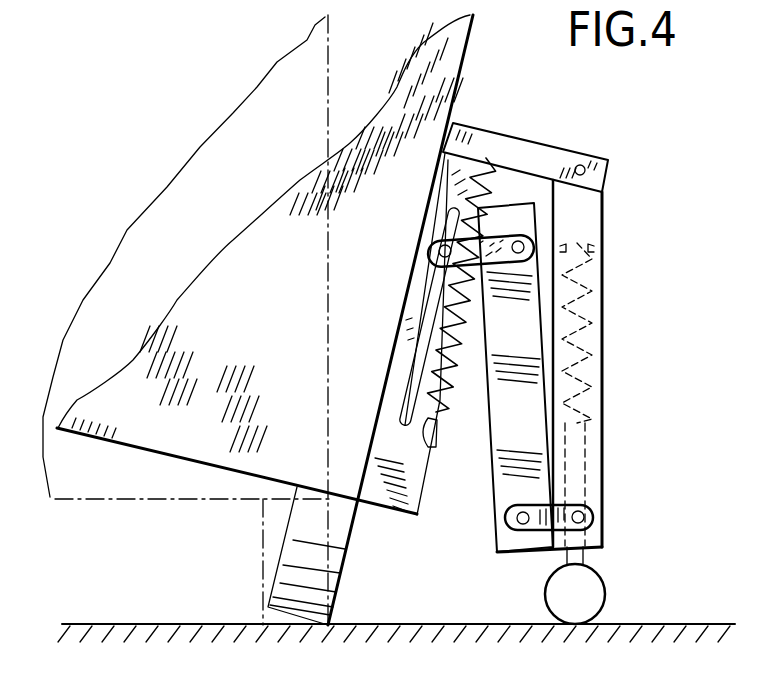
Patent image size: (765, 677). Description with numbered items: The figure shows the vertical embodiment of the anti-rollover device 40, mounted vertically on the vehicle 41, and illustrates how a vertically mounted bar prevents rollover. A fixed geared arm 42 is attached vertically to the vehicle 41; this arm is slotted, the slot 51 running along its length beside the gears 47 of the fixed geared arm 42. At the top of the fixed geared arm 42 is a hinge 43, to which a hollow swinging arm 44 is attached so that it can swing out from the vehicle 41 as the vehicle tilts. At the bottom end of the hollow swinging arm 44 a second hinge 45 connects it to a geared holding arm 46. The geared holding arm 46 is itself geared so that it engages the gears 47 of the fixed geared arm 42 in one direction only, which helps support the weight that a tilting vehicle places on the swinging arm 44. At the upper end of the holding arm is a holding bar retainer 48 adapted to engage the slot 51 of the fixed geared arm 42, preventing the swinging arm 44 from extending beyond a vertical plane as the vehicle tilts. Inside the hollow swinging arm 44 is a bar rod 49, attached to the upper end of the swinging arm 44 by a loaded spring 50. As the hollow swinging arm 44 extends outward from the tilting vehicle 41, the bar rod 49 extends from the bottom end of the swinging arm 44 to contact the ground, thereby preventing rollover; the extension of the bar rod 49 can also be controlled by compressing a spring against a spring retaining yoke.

The device 40 is at (603, 138).
The vehicle 41 is at (458, 93).
The fixed geared arm 42 is at (465, 167).
The hinge 43 is at (610, 176).
The hollow swinging arm 44 is at (592, 267).
The hinge 45 is at (593, 517).
The geared holding arm 46 is at (512, 490).
The gears 47 is at (433, 447).
The holding bar retainer 48 is at (513, 237).
The bar rod 49 is at (583, 556).
The loaded spring 50 is at (596, 362).
The slot 51 is at (430, 412).